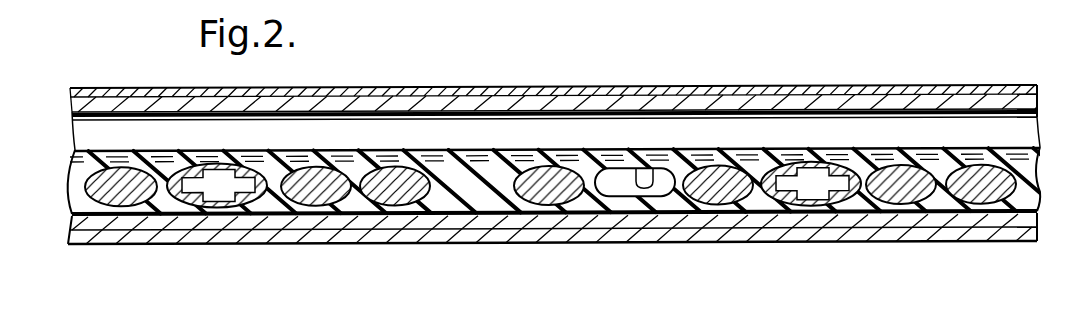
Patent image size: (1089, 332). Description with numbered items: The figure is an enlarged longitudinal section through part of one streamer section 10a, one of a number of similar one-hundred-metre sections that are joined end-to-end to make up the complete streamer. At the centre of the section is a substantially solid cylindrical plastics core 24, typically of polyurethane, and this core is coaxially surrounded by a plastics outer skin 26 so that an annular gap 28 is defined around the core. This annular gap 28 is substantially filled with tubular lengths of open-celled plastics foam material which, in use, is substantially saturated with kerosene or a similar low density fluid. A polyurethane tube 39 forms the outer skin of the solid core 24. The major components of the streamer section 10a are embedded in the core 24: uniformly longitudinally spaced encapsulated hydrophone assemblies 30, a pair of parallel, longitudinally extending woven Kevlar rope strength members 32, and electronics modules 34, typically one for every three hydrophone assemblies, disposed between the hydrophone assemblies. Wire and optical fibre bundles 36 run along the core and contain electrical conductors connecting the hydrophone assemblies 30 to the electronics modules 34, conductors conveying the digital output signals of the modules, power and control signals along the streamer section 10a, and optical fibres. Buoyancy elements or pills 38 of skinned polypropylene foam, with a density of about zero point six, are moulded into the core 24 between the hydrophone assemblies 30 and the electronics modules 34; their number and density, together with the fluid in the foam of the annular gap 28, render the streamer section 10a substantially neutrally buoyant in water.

The streamer section 10a is at (665, 253).
The core 24 is at (163, 198).
The outer skin 26 is at (141, 92).
The annular gap 28 is at (1002, 103).
The encapsulated hydrophone assembly 30 is at (245, 190).
The strength member 32 is at (610, 132).
The electronics module 34 is at (635, 196).
The wire and optical fibre bundle 36 is at (397, 151).
The buoyancy element 38 is at (908, 177).
The polyurethane tube 39 is at (807, 113).